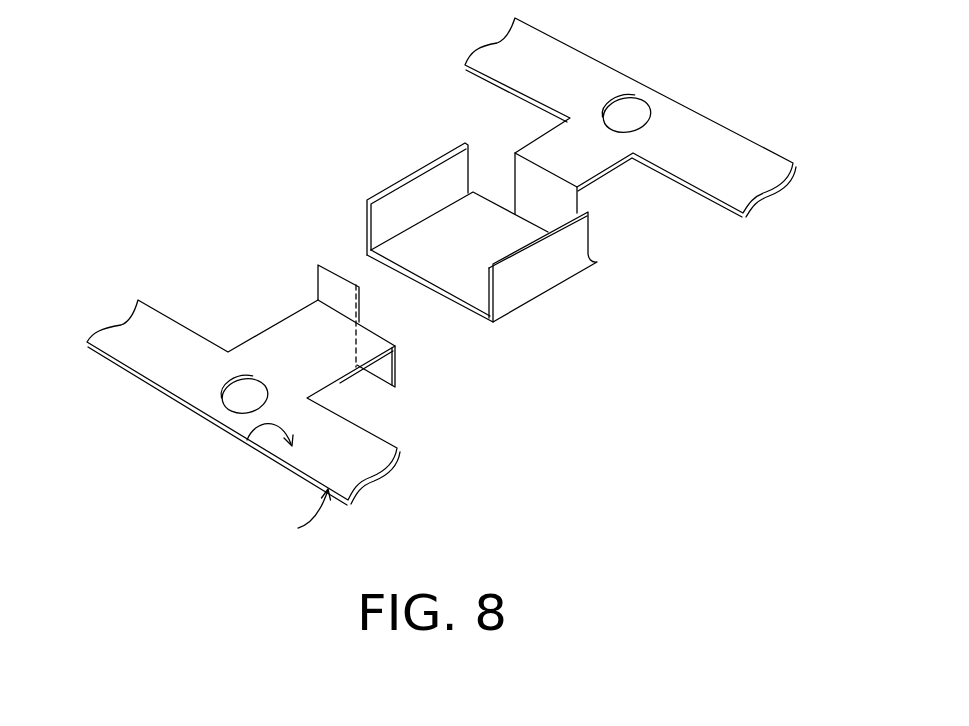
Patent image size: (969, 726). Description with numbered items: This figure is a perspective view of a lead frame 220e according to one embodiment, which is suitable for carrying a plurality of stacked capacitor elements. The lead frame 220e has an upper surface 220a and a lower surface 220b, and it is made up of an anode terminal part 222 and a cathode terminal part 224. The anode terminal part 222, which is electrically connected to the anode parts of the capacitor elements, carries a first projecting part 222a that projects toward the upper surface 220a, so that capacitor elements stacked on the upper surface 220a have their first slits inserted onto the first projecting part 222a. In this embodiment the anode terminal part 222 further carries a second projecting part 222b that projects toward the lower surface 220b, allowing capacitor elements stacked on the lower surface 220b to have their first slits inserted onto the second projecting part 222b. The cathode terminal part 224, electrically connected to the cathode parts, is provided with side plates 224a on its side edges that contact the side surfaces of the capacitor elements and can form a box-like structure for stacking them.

The upper surface 220a is at (248, 436).
The lower surface 220b is at (283, 520).
The lead frame 220e is at (461, 284).
The anode terminal part 222 is at (365, 463).
The first projecting part 222a is at (332, 290).
The second projecting part 222b is at (385, 365).
The cathode terminal part 224 is at (708, 180).
The side plates 224a is at (450, 162).